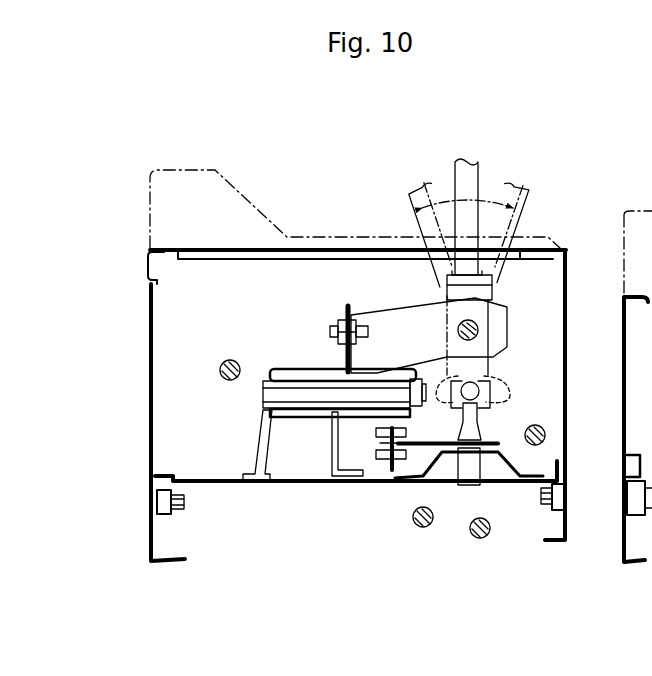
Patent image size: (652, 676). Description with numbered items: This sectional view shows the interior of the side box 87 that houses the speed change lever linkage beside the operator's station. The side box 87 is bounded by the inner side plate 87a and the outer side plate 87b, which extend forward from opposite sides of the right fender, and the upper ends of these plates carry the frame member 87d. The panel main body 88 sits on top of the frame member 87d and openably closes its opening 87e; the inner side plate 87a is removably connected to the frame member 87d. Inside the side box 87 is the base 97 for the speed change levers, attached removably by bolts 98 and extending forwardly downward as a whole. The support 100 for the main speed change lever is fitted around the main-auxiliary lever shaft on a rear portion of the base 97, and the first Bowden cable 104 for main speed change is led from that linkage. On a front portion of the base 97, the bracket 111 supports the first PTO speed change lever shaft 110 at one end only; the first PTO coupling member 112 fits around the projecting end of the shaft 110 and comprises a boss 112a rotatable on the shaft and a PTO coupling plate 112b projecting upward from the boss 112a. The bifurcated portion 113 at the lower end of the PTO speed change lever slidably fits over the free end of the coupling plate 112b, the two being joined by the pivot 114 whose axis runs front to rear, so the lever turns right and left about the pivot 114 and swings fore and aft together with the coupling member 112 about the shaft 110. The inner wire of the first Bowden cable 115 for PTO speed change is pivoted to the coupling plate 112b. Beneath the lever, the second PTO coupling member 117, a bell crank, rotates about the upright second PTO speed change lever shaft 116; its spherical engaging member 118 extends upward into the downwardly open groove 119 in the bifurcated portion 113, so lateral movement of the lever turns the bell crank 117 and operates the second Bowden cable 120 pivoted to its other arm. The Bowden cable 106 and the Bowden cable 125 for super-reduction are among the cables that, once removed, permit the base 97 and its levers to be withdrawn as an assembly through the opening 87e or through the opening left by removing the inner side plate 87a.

The side box 87 is at (574, 302).
The inner side plate 87a is at (572, 378).
The outer side plate 87b is at (150, 398).
The frame member 87d is at (558, 251).
The opening 87e is at (507, 268).
The panel main body 88 is at (265, 217).
The base 97 is at (277, 485).
The bolts 98 is at (185, 503).
The support 100 is at (230, 360).
The first Bowden cable 104 is at (538, 424).
The Bowden cable 106 is at (413, 532).
The first PTO speed change lever shaft 110 is at (307, 404).
The bracket 111 is at (258, 437).
The first PTO coupling member 112 is at (365, 304).
The boss 112a is at (390, 358).
The PTO coupling plate 112b is at (407, 297).
The bifurcated portion 113 is at (485, 293).
The pivot 114 is at (478, 330).
The first Bowden cable for PTO speed change 115 is at (332, 323).
The second PTO speed change lever shaft 116 is at (480, 462).
The second PTO coupling member 117 is at (483, 405).
The spherical engaging member 118 is at (460, 414).
The groove 119 is at (482, 374).
The second Bowden cable for PTO speed change 120 is at (377, 460).
The Bowden cable for speed change by super-reduction 125 is at (477, 540).